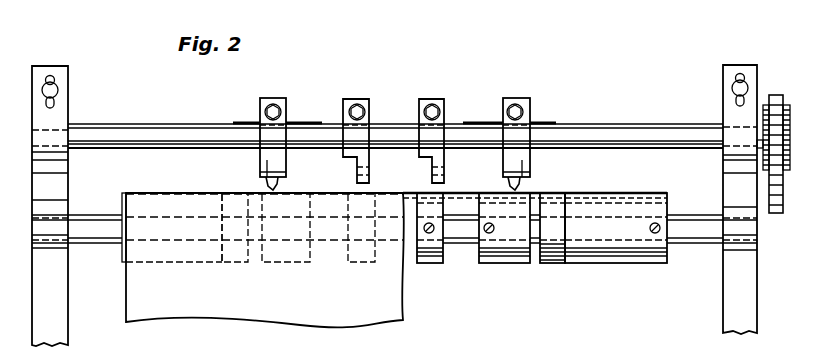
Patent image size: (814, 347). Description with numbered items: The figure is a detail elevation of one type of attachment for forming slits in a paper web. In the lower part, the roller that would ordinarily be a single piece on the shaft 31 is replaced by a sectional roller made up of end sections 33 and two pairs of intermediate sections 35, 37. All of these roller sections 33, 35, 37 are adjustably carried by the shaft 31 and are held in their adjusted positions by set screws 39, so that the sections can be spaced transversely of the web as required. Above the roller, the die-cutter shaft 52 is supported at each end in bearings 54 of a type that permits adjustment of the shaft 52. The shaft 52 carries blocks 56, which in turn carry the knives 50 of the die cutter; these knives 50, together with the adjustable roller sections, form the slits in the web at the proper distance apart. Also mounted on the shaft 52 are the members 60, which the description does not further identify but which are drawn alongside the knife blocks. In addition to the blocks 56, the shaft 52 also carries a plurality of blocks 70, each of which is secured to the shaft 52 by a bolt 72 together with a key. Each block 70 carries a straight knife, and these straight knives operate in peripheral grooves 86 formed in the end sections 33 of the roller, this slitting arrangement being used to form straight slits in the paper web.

The shaft 31 is at (695, 240).
The end sections 33 is at (152, 198).
The intermediate sections 35 is at (290, 266).
The intermediate sections 37 is at (359, 266).
The set screws 39 is at (487, 224).
The knives 50 is at (278, 188).
The shaft 52 is at (600, 126).
The bearings 54 is at (68, 73).
The blocks 56 is at (278, 137).
The bracket 60 is at (271, 104).
The blocks 70 is at (423, 113).
The bolt 72 is at (432, 103).
The peripheral grooves 86 is at (567, 257).